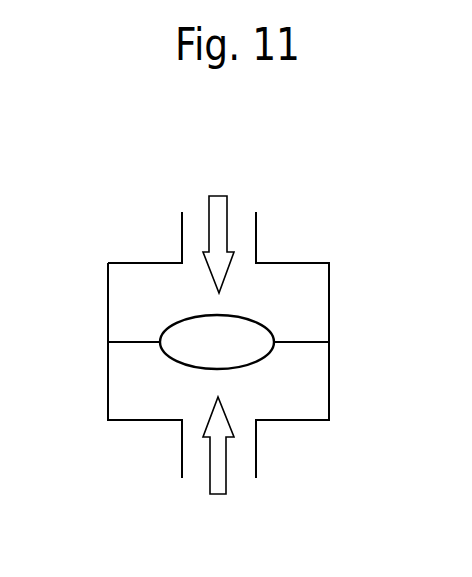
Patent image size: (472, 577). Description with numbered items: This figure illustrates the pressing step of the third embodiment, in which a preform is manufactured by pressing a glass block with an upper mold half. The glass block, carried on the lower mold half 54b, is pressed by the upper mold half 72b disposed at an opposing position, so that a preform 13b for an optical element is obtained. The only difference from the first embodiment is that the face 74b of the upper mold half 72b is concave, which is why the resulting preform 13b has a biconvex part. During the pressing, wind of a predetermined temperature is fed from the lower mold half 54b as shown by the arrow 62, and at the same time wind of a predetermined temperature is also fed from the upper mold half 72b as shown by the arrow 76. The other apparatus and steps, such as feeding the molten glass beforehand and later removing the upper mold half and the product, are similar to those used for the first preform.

The upper mold half 72b is at (317, 285).
The face 74b is at (233, 315).
The arrow 76 is at (218, 200).
The arrow 62 is at (218, 483).
The lower mold half 54b is at (303, 410).
The preform 13b is at (197, 352).